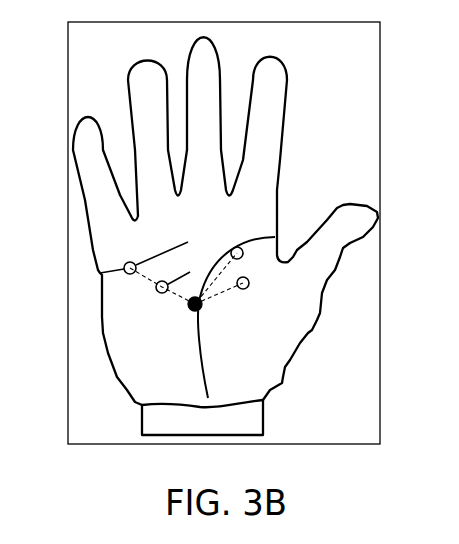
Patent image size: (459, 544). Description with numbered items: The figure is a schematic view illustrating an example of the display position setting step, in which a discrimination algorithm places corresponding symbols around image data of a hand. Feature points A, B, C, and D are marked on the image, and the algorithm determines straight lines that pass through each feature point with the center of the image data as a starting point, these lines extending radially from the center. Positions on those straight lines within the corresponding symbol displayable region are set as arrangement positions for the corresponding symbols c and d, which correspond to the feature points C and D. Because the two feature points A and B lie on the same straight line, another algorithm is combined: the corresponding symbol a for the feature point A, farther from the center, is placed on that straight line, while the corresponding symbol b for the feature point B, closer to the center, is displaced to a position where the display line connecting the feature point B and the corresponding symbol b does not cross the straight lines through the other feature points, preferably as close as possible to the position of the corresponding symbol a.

The corresponding symbol a is at (124, 266).
The corresponding symbol b is at (156, 290).
The corresponding symbol c is at (249, 281).
The corresponding symbol d is at (241, 249).
The feature point A is at (127, 255).
The feature point B is at (168, 275).
The feature point C is at (249, 297).
The feature point D is at (233, 242).